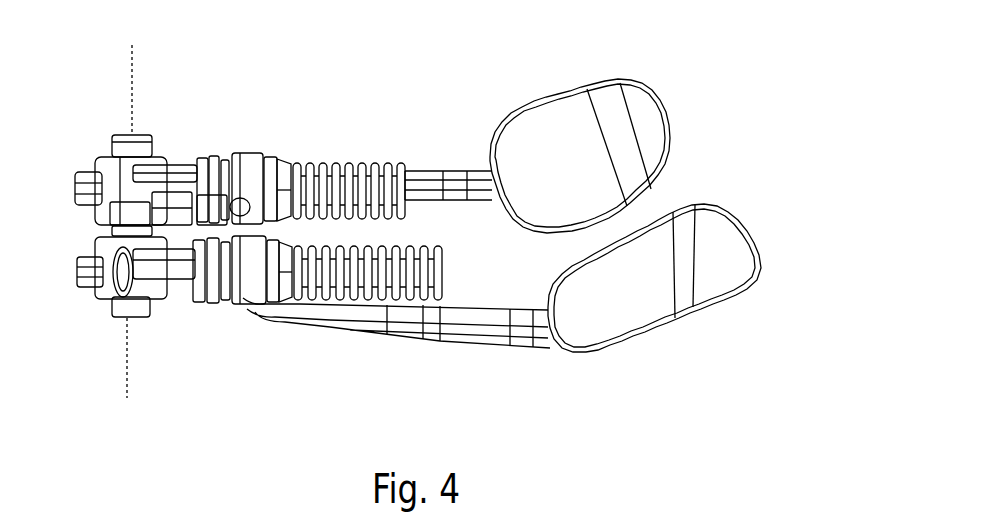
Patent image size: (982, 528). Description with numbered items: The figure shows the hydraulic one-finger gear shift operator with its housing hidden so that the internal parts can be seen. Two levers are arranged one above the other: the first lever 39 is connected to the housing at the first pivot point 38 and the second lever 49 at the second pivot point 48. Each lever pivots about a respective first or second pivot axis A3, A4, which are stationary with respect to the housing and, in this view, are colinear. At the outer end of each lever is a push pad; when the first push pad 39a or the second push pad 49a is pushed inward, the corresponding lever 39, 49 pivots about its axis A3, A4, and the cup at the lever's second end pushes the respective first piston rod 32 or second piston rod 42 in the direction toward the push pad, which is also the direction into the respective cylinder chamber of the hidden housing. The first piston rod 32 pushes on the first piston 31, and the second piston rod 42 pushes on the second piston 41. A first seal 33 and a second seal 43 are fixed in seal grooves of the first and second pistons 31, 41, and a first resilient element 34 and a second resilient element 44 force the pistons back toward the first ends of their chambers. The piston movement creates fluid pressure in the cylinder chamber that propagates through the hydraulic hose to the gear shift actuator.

The first piston 31 is at (248, 168).
The first piston rod 32 is at (173, 185).
The first seal 33 is at (285, 165).
The first resilient element 34 is at (382, 173).
The first pivot point 38 is at (120, 131).
The first lever 39 is at (664, 156).
The first push pad 39a is at (662, 142).
The second piston 41 is at (250, 313).
The second piston rod 42 is at (177, 282).
The second seal 43 is at (278, 290).
The second resilient element 44 is at (380, 297).
The second pivot point 48 is at (122, 233).
The second lever 49 is at (720, 263).
The second push pad 49a is at (718, 205).
The first pivot axis A3 is at (133, 75).
The second pivot axis A4 is at (132, 372).